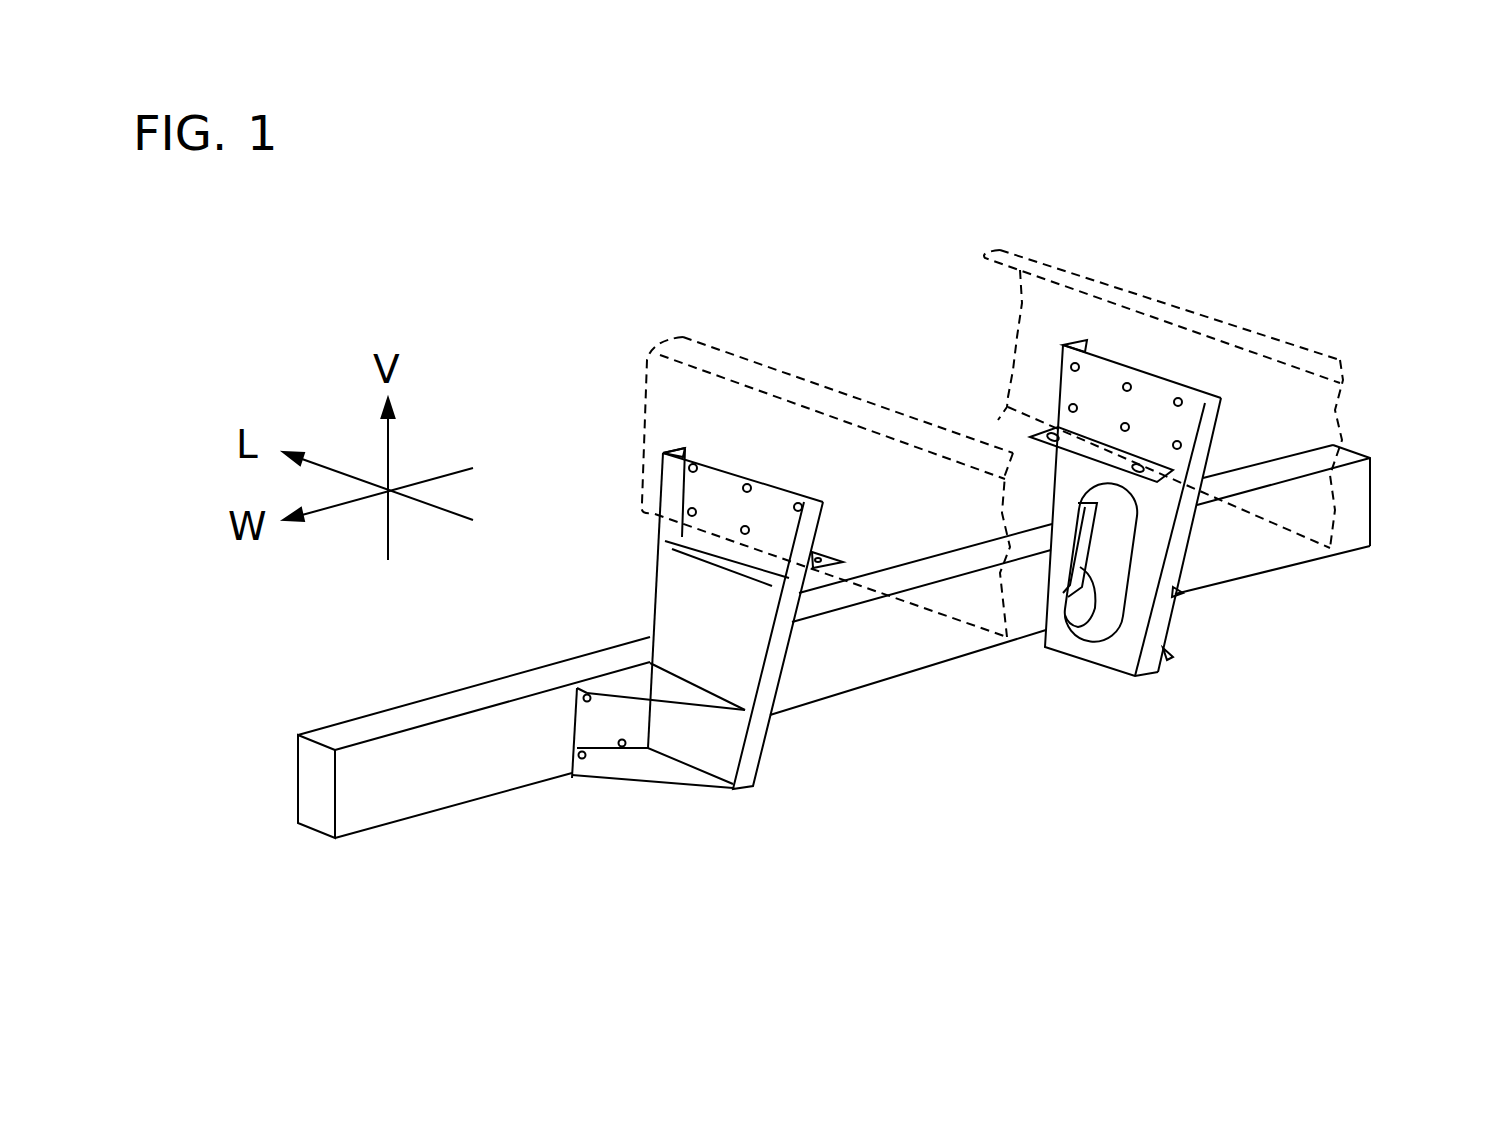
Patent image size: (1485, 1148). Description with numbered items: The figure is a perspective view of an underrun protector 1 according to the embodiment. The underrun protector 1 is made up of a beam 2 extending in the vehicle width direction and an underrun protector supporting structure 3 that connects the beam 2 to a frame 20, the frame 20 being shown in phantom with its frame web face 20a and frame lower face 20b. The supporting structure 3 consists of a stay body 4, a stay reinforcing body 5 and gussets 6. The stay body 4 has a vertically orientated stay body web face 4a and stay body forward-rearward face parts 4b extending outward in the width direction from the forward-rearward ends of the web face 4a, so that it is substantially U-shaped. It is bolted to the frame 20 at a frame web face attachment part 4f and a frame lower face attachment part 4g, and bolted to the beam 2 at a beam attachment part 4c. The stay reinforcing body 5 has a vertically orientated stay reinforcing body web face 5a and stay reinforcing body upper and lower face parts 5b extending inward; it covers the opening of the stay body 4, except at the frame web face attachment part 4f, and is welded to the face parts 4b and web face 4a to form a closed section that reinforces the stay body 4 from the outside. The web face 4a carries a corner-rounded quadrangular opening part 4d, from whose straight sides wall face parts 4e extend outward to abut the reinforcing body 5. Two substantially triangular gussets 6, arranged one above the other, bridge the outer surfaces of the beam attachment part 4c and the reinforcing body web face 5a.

The underrun protector 1 is at (497, 227).
The beam 2 is at (362, 717).
The underrun protector supporting structure 3 is at (597, 815).
The stay body 4 is at (792, 732).
The stay body web face 4a is at (793, 592).
The stay body forward-rearward face part 4b is at (653, 538).
The beam attachment part 4c is at (593, 725).
The opening part 4d is at (1103, 645).
The wall face part 4e is at (1072, 602).
The frame web face attachment part 4f is at (775, 510).
The frame lower face attachment part 4g is at (823, 563).
The stay reinforcing body 5 is at (612, 615).
The stay reinforcing body web face 5a is at (678, 600).
The stay reinforcing body upper and lower face part 5b is at (712, 553).
The gusset 6 is at (663, 693).
The frame 20 is at (670, 322).
The frame web face 20a is at (682, 418).
The frame lower face 20b is at (997, 407).